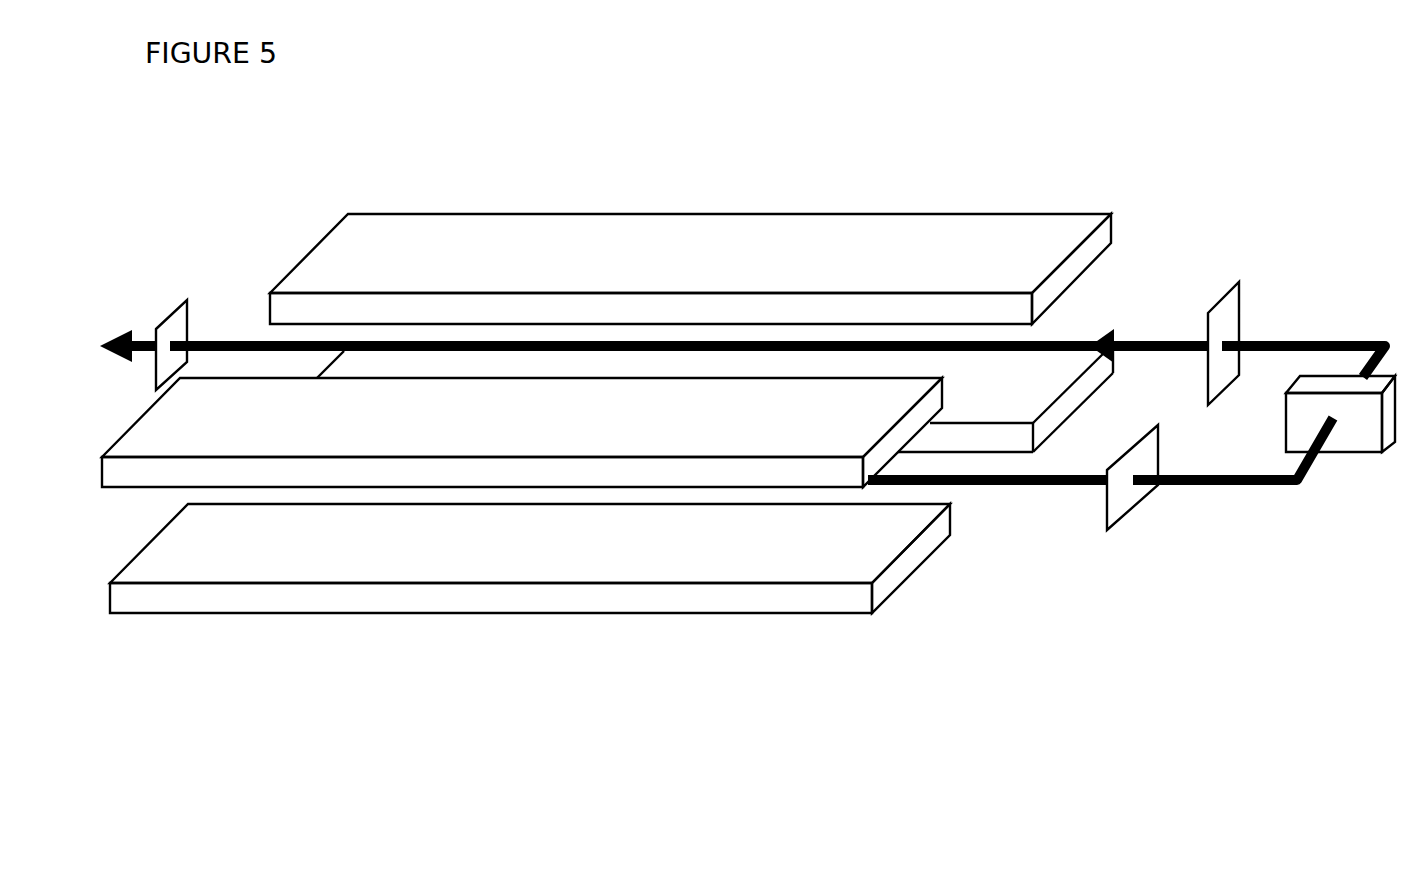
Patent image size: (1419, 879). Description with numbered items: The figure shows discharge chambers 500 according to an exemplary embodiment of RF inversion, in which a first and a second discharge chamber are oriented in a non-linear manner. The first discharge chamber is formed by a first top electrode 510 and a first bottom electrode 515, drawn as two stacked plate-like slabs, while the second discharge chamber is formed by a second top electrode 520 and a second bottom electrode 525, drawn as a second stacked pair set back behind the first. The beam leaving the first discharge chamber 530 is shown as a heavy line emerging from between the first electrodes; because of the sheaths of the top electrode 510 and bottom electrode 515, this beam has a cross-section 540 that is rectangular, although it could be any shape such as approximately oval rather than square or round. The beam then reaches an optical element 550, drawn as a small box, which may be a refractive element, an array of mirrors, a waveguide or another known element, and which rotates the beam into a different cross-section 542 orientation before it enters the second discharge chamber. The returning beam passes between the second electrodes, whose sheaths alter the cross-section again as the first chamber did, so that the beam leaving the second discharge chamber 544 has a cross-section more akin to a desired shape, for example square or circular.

The discharge chambers 500 is at (200, 216).
The first top electrode 510 is at (117, 480).
The first bottom electrode 515 is at (890, 595).
The second top electrode 520 is at (1042, 213).
The second bottom electrode 525 is at (1093, 402).
The beam leaving the first discharge chamber 530 is at (1227, 487).
The cross-section 540 is at (1118, 517).
The cross-section orientation 542 is at (1238, 310).
The beam leaving the second discharge chamber 544 is at (186, 312).
The optical element 550 is at (1358, 450).